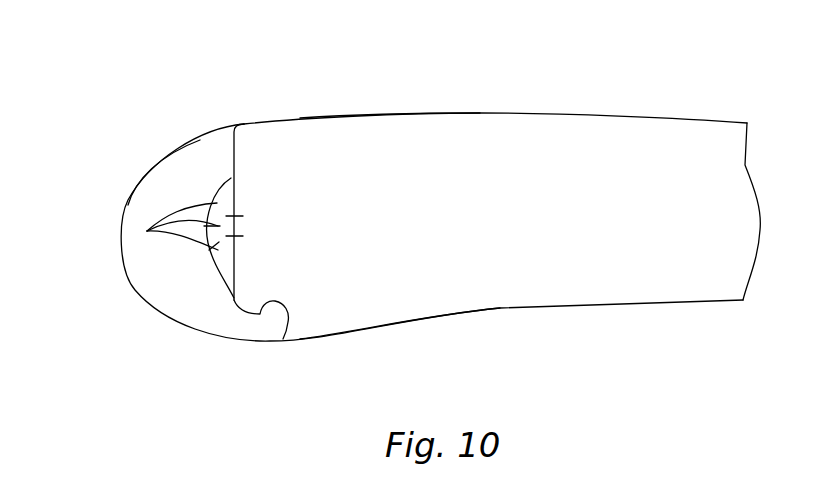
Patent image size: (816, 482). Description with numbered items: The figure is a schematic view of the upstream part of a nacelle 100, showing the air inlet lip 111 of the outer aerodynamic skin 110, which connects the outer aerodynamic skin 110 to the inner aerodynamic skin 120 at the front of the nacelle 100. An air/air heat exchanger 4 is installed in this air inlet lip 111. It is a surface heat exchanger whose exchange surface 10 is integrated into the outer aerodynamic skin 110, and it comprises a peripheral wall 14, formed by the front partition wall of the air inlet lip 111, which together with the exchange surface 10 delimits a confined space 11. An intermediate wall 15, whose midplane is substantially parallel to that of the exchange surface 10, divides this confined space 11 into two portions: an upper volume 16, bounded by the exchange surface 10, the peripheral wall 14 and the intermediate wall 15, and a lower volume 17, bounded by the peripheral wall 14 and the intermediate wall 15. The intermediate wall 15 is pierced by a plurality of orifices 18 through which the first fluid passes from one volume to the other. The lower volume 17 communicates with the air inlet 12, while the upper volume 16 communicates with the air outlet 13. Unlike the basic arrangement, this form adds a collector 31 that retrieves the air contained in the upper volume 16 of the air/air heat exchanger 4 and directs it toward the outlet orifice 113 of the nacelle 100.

The nacelle 100 is at (218, 56).
The outer aerodynamic skin 110 is at (318, 118).
The air inlet lip 111 is at (133, 188).
The confined space 11 is at (189, 181).
The exchange surface 10 is at (133, 272).
The air/air heat exchanger 4 is at (242, 173).
The lower volume 17 is at (230, 203).
The orifices 18 is at (147, 231).
The air inlet 12 is at (242, 222).
The peripheral wall 14 is at (242, 258).
The air outlet 13 is at (288, 306).
The outlet orifice 113 is at (288, 310).
The collector 31 is at (288, 325).
The upper volume 16 is at (186, 275).
The intermediate wall 15 is at (222, 280).
The inner aerodynamic skin 120 is at (370, 328).